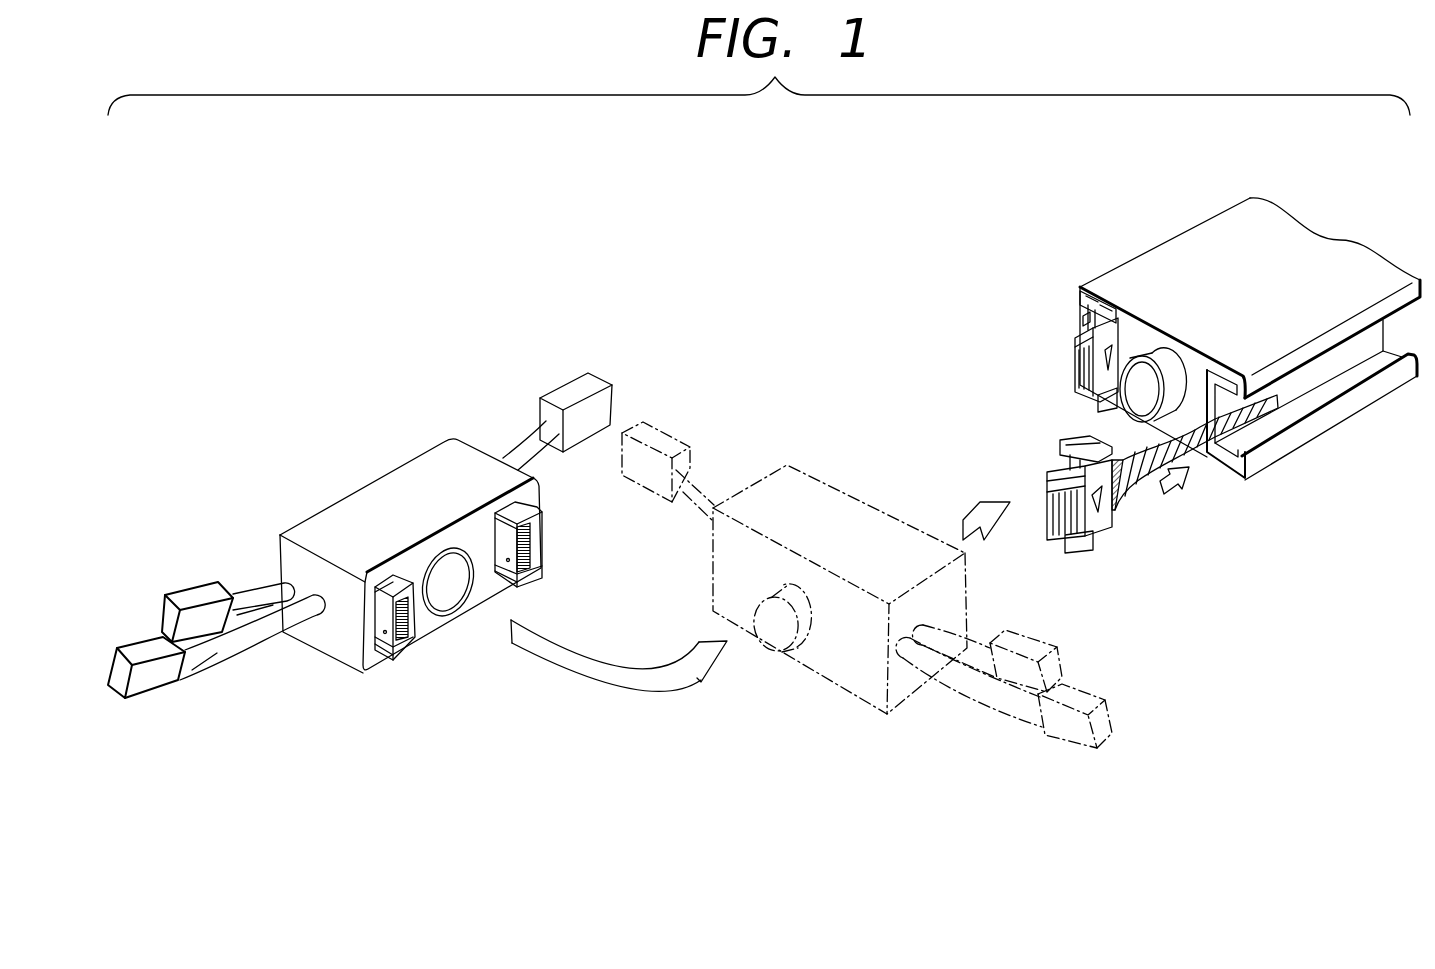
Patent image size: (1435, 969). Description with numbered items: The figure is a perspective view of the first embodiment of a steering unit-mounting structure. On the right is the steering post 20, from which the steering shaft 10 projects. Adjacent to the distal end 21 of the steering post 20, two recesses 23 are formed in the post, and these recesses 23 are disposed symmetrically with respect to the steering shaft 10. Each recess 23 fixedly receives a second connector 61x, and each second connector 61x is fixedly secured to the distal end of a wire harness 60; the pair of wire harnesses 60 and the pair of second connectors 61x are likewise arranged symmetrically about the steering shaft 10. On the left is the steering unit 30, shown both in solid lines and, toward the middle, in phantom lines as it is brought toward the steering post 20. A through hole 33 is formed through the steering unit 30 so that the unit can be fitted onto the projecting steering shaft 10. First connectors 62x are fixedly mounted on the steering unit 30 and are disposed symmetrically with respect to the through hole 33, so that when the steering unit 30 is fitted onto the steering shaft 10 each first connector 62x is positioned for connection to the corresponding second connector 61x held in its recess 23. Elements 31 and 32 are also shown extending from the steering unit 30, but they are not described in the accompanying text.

The steering shaft 10 is at (1165, 367).
The steering post 20 is at (1172, 236).
The distal end 21 is at (1138, 335).
The recess 23 is at (1085, 322).
The steering unit 30 is at (381, 477).
The cables with plugs 31 is at (243, 650).
The cable with plug 32 is at (543, 447).
The through hole 33 is at (447, 593).
The wire harness 60 is at (1143, 483).
The second connector 61x is at (1075, 348).
The first connector 62x is at (540, 550).